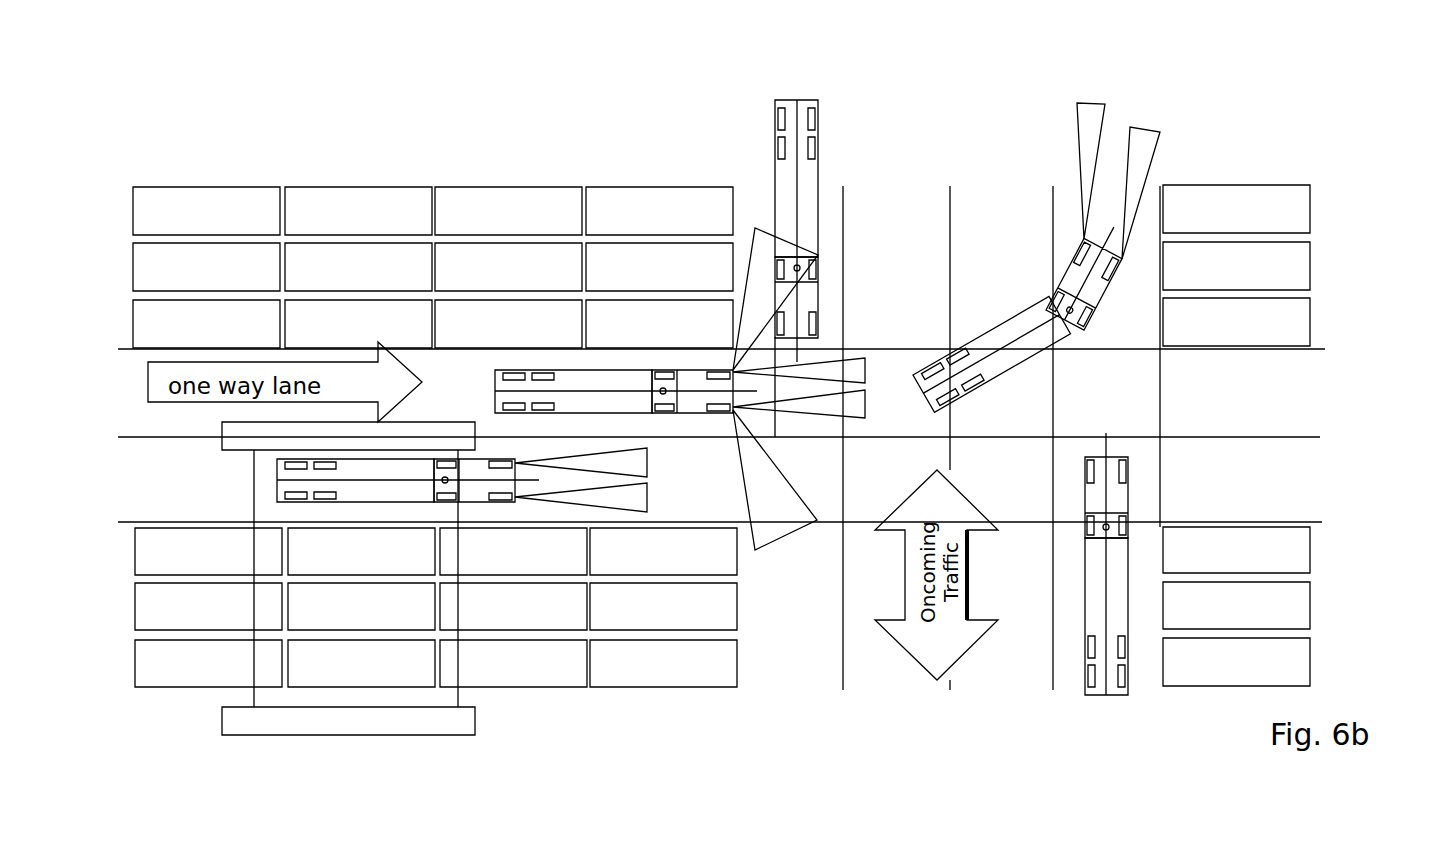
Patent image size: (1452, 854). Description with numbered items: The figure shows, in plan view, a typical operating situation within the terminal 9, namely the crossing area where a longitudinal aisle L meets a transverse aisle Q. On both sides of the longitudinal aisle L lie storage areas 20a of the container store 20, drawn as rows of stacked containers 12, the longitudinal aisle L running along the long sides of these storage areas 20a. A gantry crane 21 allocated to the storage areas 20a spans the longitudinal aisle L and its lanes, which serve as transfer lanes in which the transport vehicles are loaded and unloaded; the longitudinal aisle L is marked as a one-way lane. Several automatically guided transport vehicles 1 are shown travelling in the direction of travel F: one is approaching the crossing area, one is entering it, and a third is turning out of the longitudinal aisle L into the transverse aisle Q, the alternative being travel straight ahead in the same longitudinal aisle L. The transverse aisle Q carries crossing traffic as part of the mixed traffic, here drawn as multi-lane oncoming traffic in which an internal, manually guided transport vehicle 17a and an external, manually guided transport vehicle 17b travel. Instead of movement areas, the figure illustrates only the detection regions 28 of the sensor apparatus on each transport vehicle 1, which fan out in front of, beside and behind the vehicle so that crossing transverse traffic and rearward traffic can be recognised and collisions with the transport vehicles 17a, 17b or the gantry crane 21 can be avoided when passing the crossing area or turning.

The automatically guided transport vehicle 1 is at (607, 388).
The terminal 9 is at (418, 148).
The container 12 is at (770, 444).
The container store 20 is at (770, 444).
The storage area 20a is at (175, 275).
The internal, manually guided transport vehicle 17a is at (786, 192).
The external, manually guided transport vehicle 17b is at (1100, 614).
The gantry crane 21 is at (405, 696).
The detection region 28 is at (818, 372).
The longitudinal aisle L is at (465, 360).
The direction of travel F is at (700, 478).
The transverse aisle Q is at (922, 208).